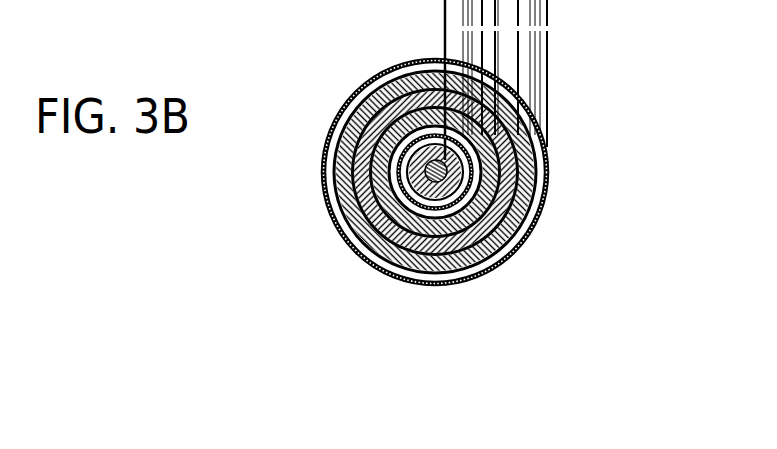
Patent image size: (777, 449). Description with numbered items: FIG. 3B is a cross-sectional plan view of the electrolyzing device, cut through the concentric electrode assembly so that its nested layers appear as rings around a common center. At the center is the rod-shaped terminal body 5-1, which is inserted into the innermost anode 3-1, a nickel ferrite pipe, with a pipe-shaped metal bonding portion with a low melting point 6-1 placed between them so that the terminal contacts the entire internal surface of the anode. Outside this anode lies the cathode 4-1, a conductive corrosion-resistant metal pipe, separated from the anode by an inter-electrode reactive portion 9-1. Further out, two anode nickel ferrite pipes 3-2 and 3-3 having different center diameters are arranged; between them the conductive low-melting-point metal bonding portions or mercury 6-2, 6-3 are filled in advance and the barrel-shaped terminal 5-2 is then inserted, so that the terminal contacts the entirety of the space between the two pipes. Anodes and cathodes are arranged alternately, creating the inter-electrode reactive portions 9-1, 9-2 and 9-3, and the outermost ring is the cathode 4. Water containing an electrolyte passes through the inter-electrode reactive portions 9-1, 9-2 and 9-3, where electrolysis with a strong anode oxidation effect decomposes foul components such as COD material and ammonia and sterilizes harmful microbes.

The rod-shaped terminal body 5-1 is at (518, 97).
The metal bonding portion with low melting point 6-1 is at (527, 115).
The anode 3-1 is at (540, 128).
The cathode 4-1 is at (547, 147).
The anode 3-2 is at (530, 217).
The metal bonding portion with low melting point 6-2 is at (523, 243).
The barrel-shaped terminal 5-2 is at (515, 253).
The metal bonding portion with low melting point 6-3 is at (508, 262).
The anode 3-3 is at (485, 272).
The inter-electrode reactive portion 9-3 is at (330, 187).
The inter-electrode reactive portion 9-2 is at (398, 195).
The inter-electrode reactive portion 9-1 is at (383, 255).
The cathode 4 is at (450, 288).